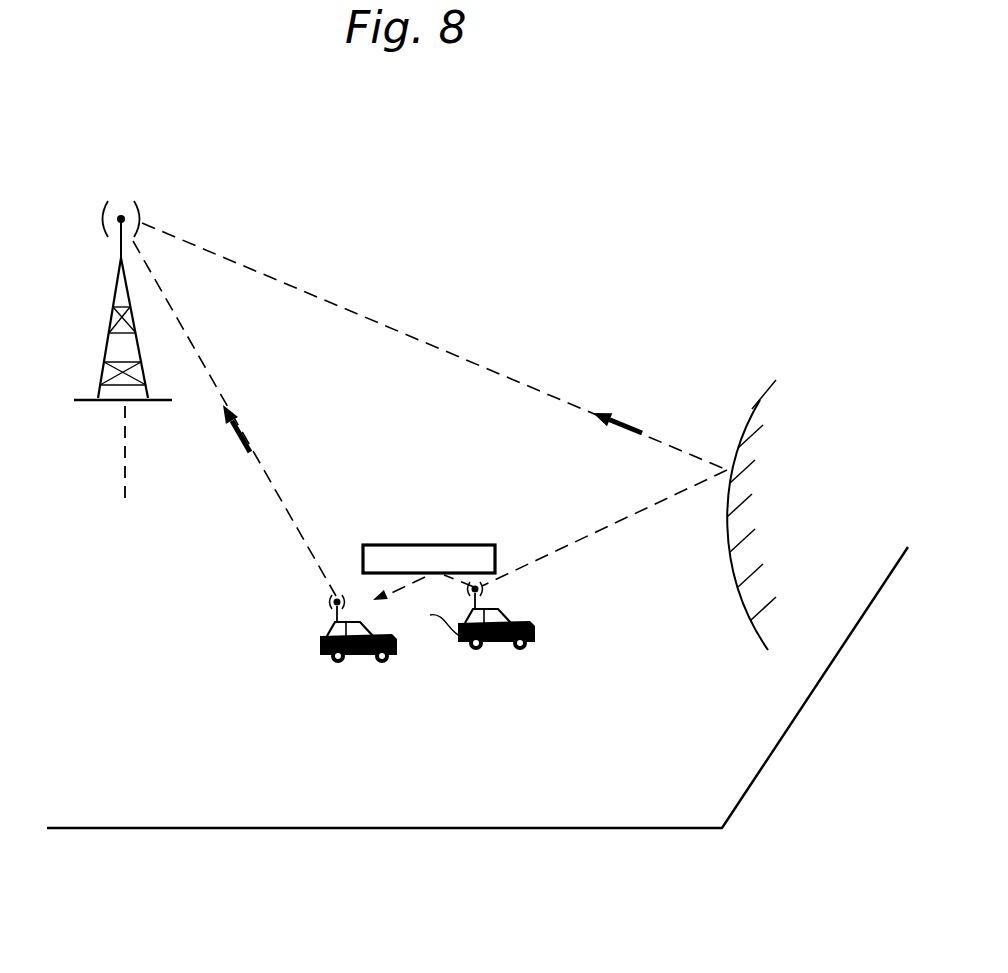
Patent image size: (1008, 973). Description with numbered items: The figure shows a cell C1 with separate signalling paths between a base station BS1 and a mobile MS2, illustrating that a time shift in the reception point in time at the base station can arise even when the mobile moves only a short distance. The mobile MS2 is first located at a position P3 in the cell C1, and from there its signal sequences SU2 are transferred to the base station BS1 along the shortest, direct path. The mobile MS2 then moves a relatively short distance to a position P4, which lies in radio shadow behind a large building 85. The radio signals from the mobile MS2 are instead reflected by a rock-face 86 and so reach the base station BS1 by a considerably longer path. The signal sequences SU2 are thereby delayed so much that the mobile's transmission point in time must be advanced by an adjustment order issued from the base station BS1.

The base station BS1 is at (108, 392).
The signal sequences SU2 is at (235, 420).
The rock-face 86 is at (758, 407).
The large building 85 is at (430, 560).
The mobile MS2 is at (314, 648).
The position P3 is at (358, 648).
The position P4 is at (482, 636).
The cell C1 is at (510, 813).